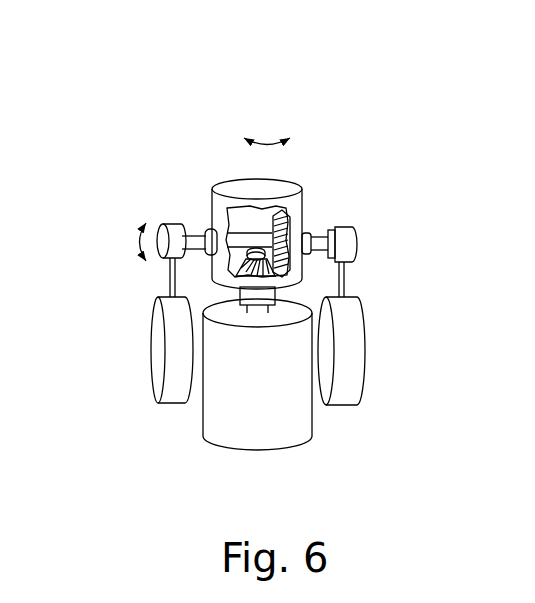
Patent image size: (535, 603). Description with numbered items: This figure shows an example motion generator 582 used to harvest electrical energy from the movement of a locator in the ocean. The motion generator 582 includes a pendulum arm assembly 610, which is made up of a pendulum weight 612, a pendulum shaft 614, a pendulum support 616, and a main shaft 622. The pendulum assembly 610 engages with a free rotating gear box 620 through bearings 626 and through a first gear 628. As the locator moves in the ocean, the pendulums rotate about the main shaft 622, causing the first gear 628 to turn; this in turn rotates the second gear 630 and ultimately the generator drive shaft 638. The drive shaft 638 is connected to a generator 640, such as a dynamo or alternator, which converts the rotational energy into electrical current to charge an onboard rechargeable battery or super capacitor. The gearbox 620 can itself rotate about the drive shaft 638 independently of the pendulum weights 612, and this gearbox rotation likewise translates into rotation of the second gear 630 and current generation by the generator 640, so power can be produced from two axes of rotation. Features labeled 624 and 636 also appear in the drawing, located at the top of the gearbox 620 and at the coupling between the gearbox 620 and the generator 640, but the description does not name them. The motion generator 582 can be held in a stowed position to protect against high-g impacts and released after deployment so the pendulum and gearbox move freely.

The motion generator 582 is at (403, 67).
The pendulum arm assembly 610 is at (115, 258).
The pendulum weight 612 is at (150, 348).
The pendulum shaft 614 is at (168, 275).
The pendulum support 616 is at (162, 220).
The free rotating gear box 620 is at (304, 139).
The main shaft 622 is at (193, 232).
The housing top / rotation axis 624 is at (232, 177).
The bearings 626 is at (208, 226).
The first gear 628 is at (290, 247).
The second gear 630 is at (268, 274).
The connector 636 is at (253, 296).
The generator drive shaft 638 is at (258, 311).
The generator 640 is at (315, 413).